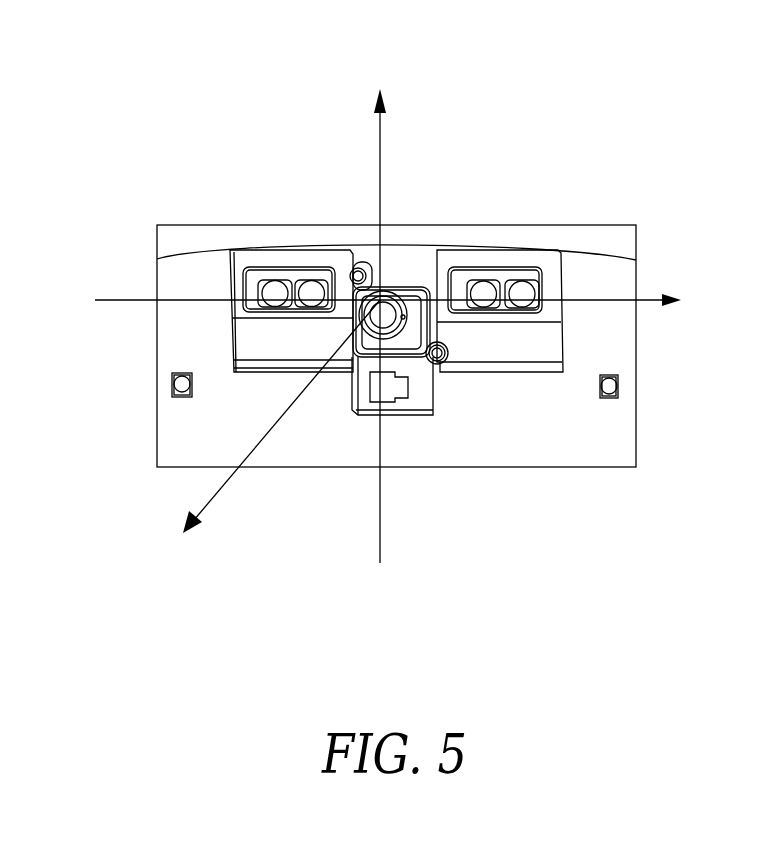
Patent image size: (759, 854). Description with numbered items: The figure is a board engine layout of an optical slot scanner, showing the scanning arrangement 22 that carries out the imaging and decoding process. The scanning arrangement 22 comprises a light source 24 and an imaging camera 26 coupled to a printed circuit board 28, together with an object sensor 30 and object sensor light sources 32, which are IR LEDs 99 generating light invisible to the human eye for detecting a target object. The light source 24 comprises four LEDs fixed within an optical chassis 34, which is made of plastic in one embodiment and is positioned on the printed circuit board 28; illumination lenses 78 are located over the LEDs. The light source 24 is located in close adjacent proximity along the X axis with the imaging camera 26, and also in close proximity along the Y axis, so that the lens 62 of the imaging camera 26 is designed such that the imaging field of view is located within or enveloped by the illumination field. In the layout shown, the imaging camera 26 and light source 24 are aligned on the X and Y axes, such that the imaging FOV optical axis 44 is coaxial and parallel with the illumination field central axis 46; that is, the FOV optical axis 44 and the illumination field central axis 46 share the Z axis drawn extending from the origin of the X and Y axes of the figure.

The scanning arrangement 22 is at (620, 156).
The light source 24 is at (277, 292).
The imaging camera 26 is at (417, 288).
The printed circuit board 28 is at (612, 455).
The object sensor 30 is at (417, 400).
The object sensor light source 32 is at (172, 384).
The optical chassis 34 is at (260, 350).
The imaging FOV optical axis 44 is at (281, 416).
The illumination field central axis 46 is at (222, 487).
The lens 62 is at (376, 320).
The illumination lenses 78 is at (285, 290).
The IR LEDs 99 is at (618, 386).